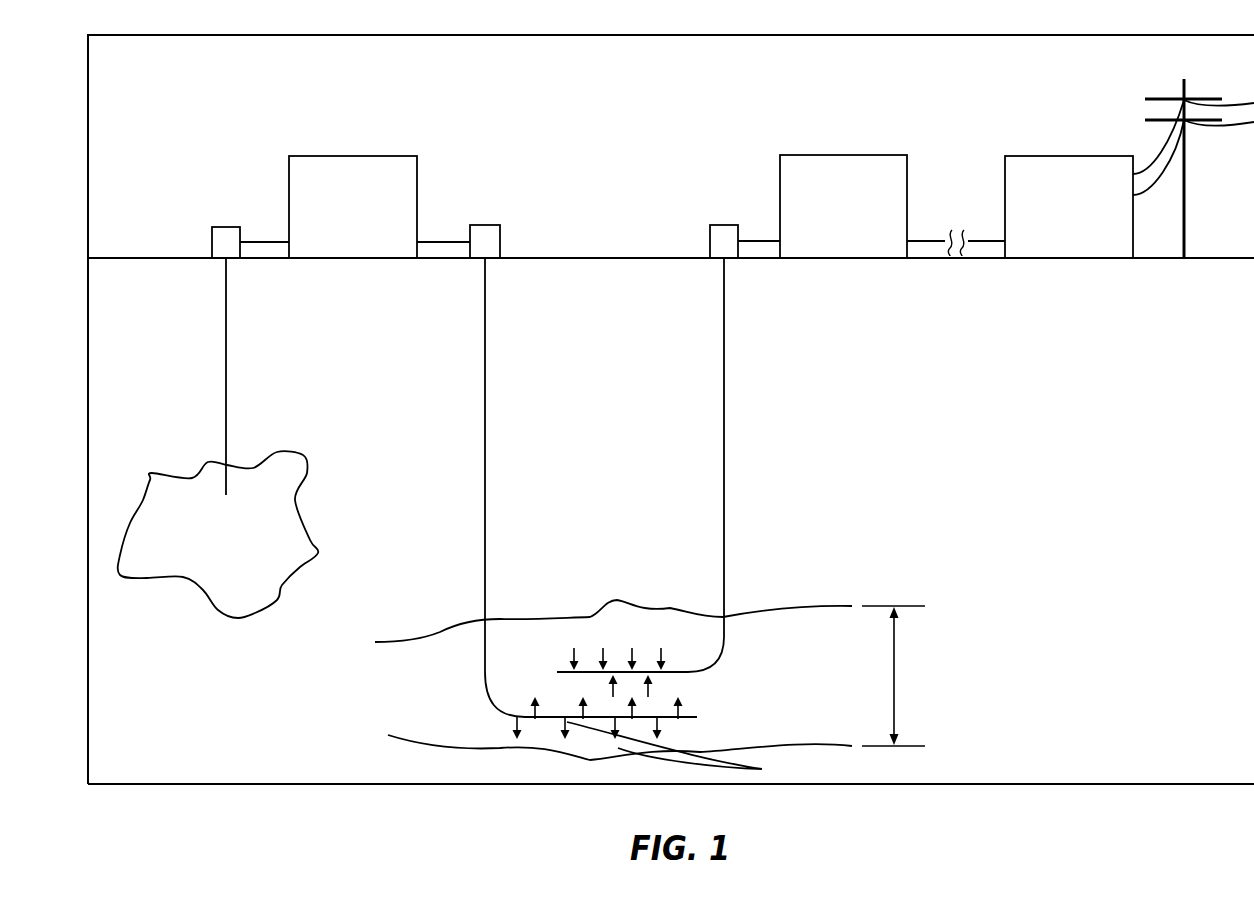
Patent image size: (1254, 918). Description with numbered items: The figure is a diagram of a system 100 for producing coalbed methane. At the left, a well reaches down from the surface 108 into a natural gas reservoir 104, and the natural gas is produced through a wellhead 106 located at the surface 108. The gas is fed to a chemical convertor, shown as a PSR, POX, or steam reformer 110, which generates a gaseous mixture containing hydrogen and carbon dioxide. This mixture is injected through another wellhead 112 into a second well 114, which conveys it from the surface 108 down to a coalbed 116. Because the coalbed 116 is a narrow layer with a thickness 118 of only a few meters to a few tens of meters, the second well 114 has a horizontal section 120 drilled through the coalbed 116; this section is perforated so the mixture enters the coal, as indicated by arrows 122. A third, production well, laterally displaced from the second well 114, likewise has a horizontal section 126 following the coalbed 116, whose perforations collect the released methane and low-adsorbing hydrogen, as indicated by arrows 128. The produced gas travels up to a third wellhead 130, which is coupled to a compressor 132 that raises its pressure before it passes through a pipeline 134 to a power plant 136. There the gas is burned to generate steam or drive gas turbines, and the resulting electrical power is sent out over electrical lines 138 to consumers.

The system 100 is at (524, 92).
The natural gas reservoir 104 is at (293, 448).
The wellhead 106 is at (227, 226).
The surface 108 is at (111, 257).
The PSR, POX, or steam reformer 110 is at (354, 155).
The wellhead 112 is at (485, 224).
The second well 114 is at (487, 425).
The coalbed 116 is at (808, 604).
The thickness 118 is at (895, 672).
The horizontal section 120 is at (504, 602).
The arrows 122 is at (226, 352).
The horizontal section 126 is at (697, 592).
The arrows 128 is at (627, 650).
The third wellhead 130 is at (726, 224).
The compressor 132 is at (840, 154).
The pipeline 134 is at (984, 240).
The power plant 136 is at (1068, 155).
The electrical lines 138 is at (1151, 162).